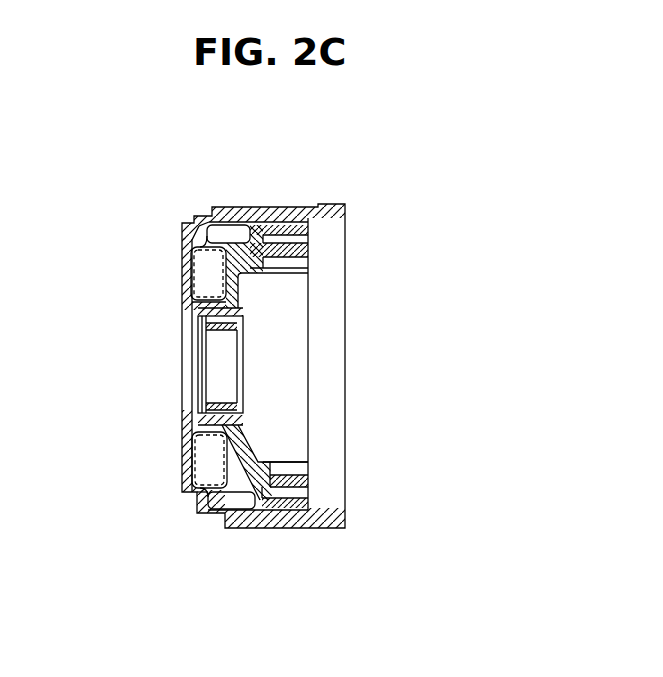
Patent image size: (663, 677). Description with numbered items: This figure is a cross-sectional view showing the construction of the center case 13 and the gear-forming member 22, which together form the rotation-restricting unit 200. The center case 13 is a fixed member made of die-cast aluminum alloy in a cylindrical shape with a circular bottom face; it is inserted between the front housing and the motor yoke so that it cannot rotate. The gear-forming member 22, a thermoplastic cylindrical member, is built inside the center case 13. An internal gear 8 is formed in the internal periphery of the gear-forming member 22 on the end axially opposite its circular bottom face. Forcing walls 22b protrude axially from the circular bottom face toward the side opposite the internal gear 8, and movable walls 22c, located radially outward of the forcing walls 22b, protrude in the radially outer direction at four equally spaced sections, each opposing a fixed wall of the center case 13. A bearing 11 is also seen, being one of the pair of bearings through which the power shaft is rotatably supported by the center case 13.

The rotation-restricting unit 200 is at (170, 489).
The center case 13 is at (281, 207).
The gear-forming member 22 is at (302, 253).
The internal gear 8 is at (283, 268).
The forcing wall 22b is at (198, 273).
The movable wall 22c is at (233, 232).
The bearing 11 is at (225, 400).